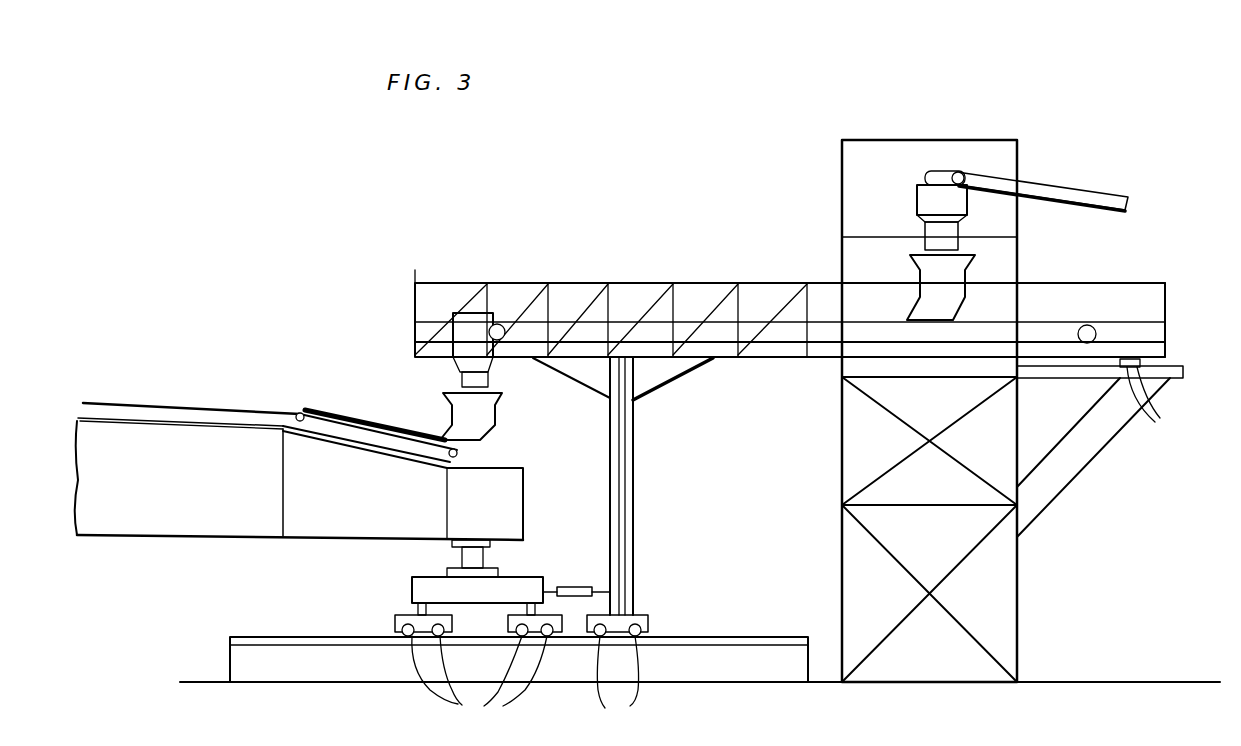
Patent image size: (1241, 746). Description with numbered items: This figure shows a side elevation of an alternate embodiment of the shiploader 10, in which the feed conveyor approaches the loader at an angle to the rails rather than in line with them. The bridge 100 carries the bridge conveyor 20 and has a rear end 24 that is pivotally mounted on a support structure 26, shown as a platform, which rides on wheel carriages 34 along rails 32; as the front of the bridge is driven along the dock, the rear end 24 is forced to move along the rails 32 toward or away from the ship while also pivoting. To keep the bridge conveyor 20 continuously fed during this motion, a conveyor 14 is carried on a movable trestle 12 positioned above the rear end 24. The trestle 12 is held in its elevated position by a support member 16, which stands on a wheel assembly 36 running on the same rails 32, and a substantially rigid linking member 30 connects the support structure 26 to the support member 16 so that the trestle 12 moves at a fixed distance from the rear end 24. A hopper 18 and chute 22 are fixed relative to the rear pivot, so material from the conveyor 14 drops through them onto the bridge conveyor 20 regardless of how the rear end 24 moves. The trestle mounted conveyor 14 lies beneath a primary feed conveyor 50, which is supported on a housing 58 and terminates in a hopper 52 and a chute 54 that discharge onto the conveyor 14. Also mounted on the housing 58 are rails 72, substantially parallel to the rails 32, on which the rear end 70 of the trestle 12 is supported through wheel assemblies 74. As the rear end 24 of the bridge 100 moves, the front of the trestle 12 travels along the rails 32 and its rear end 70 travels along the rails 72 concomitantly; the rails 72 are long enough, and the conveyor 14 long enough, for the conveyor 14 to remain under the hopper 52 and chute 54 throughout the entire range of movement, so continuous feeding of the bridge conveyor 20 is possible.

The shiploader 10 is at (318, 349).
The movable trestle 12 is at (740, 284).
The conveyor 14 is at (617, 322).
The support member 16 is at (634, 472).
The hopper 18 is at (448, 336).
The bridge conveyor 20 is at (380, 420).
The chute 22 is at (499, 418).
The rear end 24 is at (340, 522).
The support structure 26 is at (412, 590).
The linking member 30 is at (585, 582).
The rails 32 is at (275, 637).
The wheel carriages 34 is at (478, 667).
The wheel assembly 36 is at (617, 667).
The primary feed conveyor 50 is at (1045, 190).
The hopper 52 is at (915, 203).
The chute 54 is at (975, 288).
The housing 58 is at (932, 140).
The rear end of trestle 70 is at (1166, 320).
The rails 72 is at (1178, 366).
The wheel assemblies 74 is at (1153, 398).
The bridge 100 is at (170, 520).